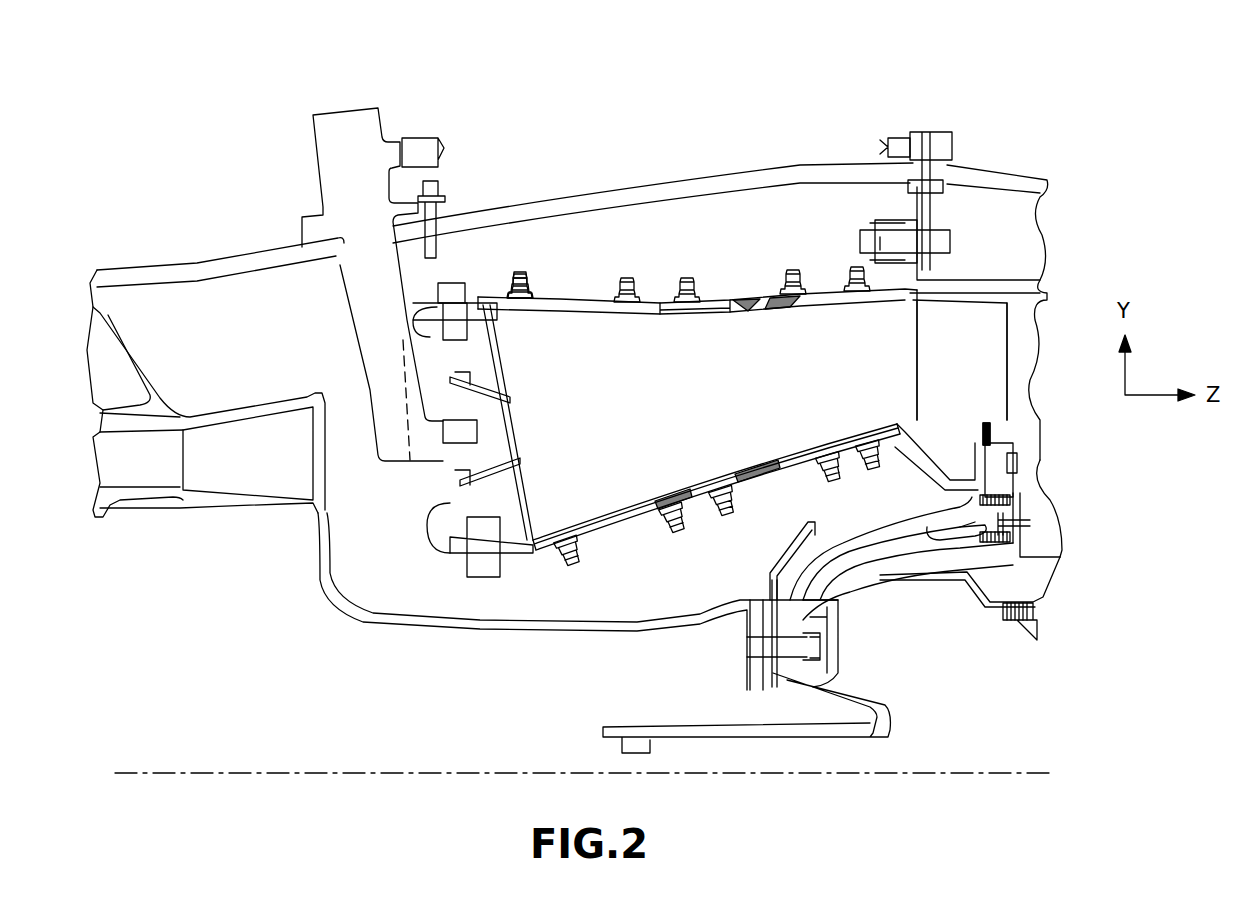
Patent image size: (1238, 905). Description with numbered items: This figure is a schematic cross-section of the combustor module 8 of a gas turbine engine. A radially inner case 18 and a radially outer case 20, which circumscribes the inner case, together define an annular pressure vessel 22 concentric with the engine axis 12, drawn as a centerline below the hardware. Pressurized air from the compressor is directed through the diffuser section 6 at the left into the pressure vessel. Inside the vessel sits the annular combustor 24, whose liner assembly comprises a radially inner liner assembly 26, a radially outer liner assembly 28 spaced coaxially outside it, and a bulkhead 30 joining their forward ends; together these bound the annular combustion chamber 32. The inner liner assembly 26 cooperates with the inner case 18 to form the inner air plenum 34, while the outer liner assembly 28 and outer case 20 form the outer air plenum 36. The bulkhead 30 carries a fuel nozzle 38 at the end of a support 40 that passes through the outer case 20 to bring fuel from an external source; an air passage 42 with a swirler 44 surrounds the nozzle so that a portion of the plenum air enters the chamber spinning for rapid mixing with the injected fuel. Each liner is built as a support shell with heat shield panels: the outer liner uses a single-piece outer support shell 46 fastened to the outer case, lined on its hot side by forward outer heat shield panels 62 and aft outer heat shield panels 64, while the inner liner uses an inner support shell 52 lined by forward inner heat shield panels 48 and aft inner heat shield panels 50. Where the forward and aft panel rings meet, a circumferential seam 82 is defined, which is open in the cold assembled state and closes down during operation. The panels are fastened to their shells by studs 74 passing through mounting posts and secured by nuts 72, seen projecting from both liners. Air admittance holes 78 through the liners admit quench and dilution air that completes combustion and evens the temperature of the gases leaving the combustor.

The diffuser section 6 is at (264, 466).
The combustor module 8 is at (828, 62).
The engine axis 12 is at (993, 768).
The radially inner case 18 is at (353, 625).
The radially outer case 20 is at (802, 162).
The annular pressure vessel 22 is at (392, 572).
The annular combustor 24 is at (594, 538).
The radially inner liner assembly 26 is at (617, 528).
The radially outer liner assembly 28 is at (770, 292).
The bulkhead 30 is at (485, 340).
The annular combustion chamber 32 is at (645, 429).
The inner air plenum 34 is at (735, 584).
The outer air plenum 36 is at (841, 224).
The fuel nozzle 38 is at (455, 455).
The support 40 is at (365, 300).
The air passage 42 is at (506, 444).
The swirler 44 is at (510, 400).
The outer support shell 46 is at (648, 293).
The forward inner heat shield panels 48 is at (612, 500).
The aft inner heat shield panels 50 is at (830, 437).
The inner support shell 52 is at (705, 495).
The forward outer heat shield panels 62 is at (618, 309).
The aft outer heat shield panels 64 is at (830, 301).
The nuts 72 is at (838, 462).
The studs 74 is at (832, 478).
The air admittance holes 78 is at (738, 311).
The circumferential seam 82 is at (692, 483).